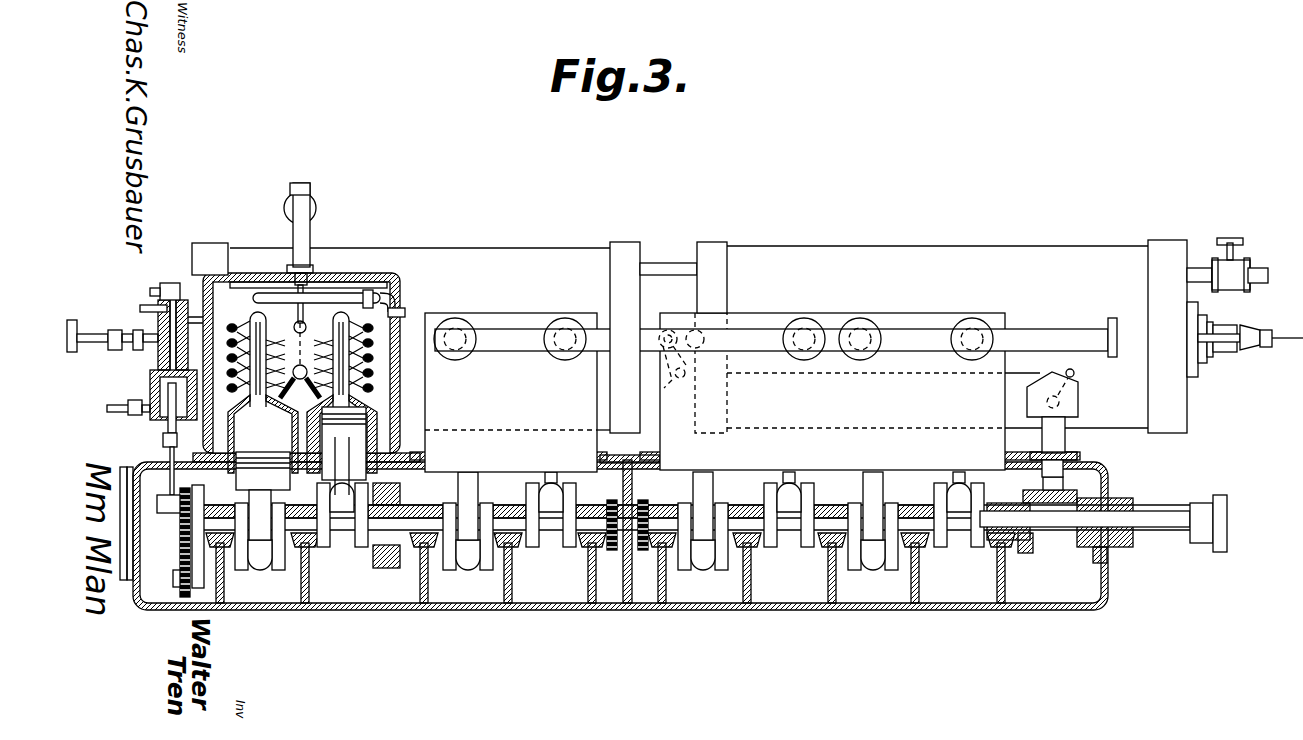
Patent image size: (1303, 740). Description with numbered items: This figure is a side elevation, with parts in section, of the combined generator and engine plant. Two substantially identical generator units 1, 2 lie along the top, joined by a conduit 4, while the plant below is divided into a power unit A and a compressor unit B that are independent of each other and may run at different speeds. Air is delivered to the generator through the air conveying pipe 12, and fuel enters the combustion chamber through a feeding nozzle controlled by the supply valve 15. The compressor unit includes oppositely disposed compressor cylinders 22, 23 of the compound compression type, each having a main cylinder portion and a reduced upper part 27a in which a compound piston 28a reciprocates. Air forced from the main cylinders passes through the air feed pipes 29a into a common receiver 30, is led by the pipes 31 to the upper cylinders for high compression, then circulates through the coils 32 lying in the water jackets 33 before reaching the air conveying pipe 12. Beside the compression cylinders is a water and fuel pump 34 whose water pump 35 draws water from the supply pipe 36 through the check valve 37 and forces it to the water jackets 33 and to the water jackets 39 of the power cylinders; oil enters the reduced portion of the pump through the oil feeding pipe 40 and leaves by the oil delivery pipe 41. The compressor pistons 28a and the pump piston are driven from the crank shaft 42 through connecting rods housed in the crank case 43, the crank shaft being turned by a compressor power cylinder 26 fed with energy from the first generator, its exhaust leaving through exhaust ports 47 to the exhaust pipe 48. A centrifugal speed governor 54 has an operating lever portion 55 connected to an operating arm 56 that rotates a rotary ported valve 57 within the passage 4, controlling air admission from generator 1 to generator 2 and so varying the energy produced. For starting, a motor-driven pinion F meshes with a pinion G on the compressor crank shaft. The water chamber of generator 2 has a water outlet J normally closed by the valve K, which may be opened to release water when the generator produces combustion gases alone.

The generator unit 1 is at (517, 248).
The generator unit 2 is at (903, 247).
The conduit 4 is at (690, 330).
The air conveying pipe 12 is at (312, 207).
The supply valve 15 is at (110, 333).
The compressor cylinder 22 is at (295, 478).
The compressor cylinder 23 is at (398, 480).
The compressor power cylinder 26 is at (365, 440).
The reduced upper part 27a is at (240, 317).
The compound piston 28a is at (476, 426).
The air feed pipe 29a is at (370, 402).
The common receiver 30 is at (397, 307).
The pipe 31 is at (322, 327).
The coil 32 is at (273, 296).
The water jacket 33 is at (400, 390).
The water and fuel pump 34 is at (160, 357).
The water pump 35 is at (160, 413).
The supply pipe 36 is at (113, 403).
The check valve 37 is at (135, 415).
The water jacket 39 is at (160, 322).
The oil feeding pipe 40 is at (150, 308).
The oil delivery pipe 41 is at (152, 289).
The crank shaft 42 is at (614, 536).
The crank case 43 is at (400, 607).
The exhaust port 47 is at (455, 339).
The exhaust pipe 48 is at (917, 332).
The speed governor 54 is at (1075, 403).
The operating lever portion 55 is at (793, 373).
The operating arm 56 is at (675, 376).
The rotary ported valve 57 is at (667, 330).
The power unit A is at (832, 391).
The compressor unit B is at (517, 392).
The pinion F is at (178, 566).
The pinion G is at (182, 535).
The water outlet J is at (1262, 272).
The valve K is at (1228, 272).